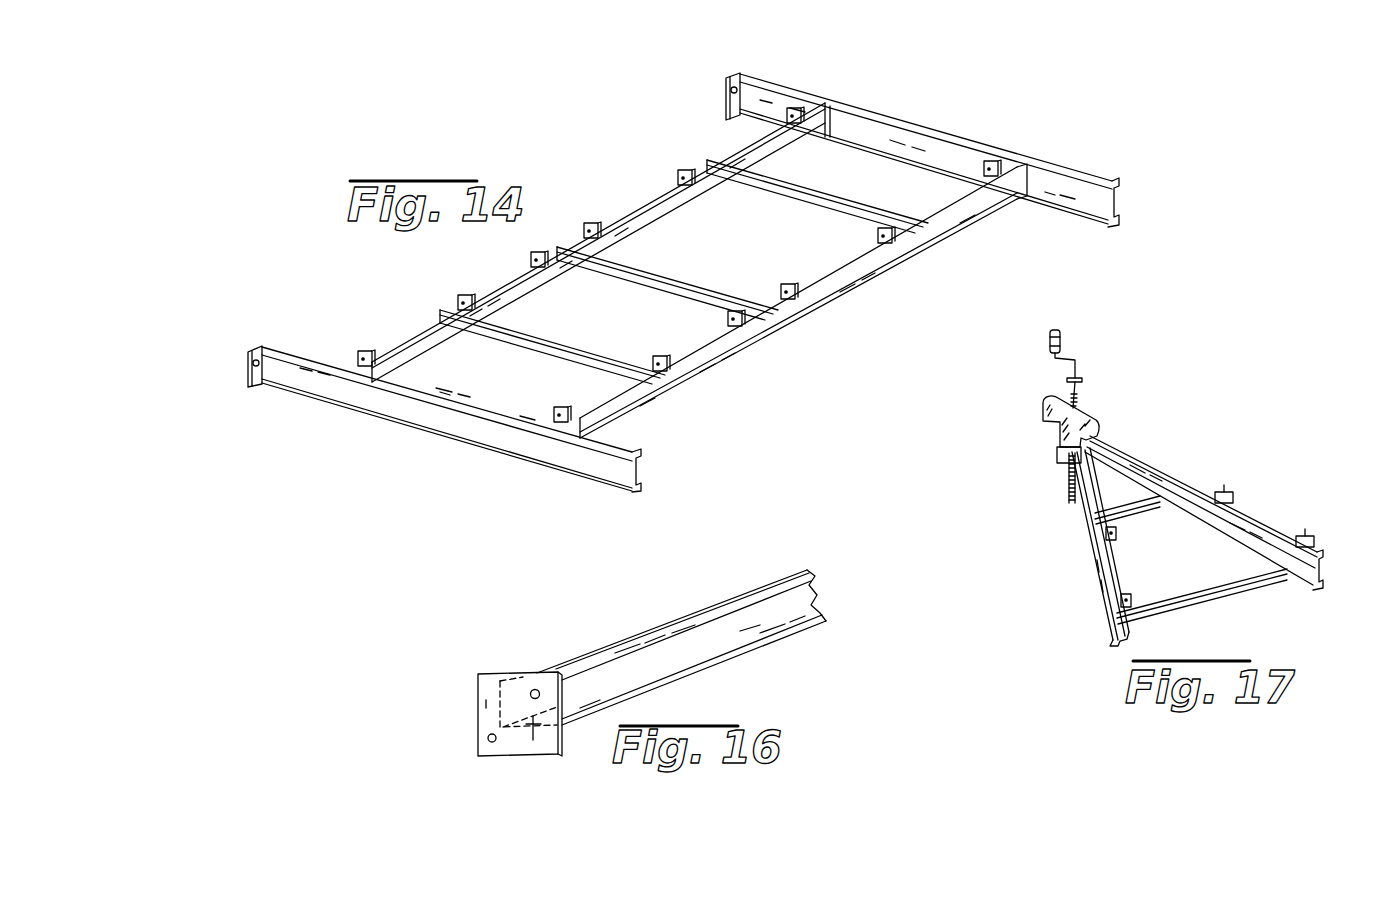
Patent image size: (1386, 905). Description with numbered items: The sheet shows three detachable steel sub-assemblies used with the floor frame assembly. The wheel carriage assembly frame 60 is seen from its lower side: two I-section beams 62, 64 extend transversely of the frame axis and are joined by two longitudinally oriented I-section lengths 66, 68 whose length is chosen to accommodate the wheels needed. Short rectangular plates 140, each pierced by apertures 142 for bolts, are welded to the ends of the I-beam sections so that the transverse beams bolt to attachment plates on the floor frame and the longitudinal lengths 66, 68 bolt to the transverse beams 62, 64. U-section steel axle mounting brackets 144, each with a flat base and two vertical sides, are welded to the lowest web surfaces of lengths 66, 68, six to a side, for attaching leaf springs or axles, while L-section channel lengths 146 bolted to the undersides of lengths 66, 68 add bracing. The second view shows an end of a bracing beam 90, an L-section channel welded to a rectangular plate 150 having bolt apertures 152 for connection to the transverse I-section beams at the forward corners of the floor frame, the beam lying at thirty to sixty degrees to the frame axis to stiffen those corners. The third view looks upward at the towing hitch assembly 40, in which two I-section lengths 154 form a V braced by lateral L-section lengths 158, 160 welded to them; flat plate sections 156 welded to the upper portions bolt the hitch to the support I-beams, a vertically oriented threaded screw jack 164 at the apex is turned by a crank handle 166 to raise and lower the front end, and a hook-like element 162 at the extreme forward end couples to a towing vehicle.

In FIG. 17, the towing hitch assembly 40 is at (1058, 541).
In FIG. 14, the wheel carriage assembly frame 60 is at (587, 150).
In FIG. 14, the I-section beam 62 is at (425, 410).
In FIG. 14, the I-section beam 64 is at (928, 150).
In FIG. 14, the I-section length 66 is at (637, 232).
In FIG. 14, the I-section length 68 is at (842, 287).
In FIG. 16, the bracing beam 90 is at (740, 645).
In FIG. 14, the rectangular plate 140 is at (263, 346).
In FIG. 14, the aperture 142 is at (256, 367).
In FIG. 14, the axle mounting bracket 144 is at (874, 233).
In FIG. 14, the L-section channel length 146 is at (823, 192).
In FIG. 16, the rectangular plate 150 is at (483, 683).
In FIG. 16, the bolt aperture 152 is at (488, 738).
In FIG. 17, the I-section length 154 is at (1107, 603).
In FIG. 17, the flat metal plate section 156 is at (1227, 495).
In FIG. 17, the lateral L-section length 158 is at (1137, 507).
In FIG. 17, the lateral L-section length 160 is at (1240, 573).
In FIG. 17, the hook-like element 162 is at (1042, 406).
In FIG. 17, the threaded screw jack 164 is at (1068, 492).
In FIG. 17, the crank handle 166 is at (1062, 337).